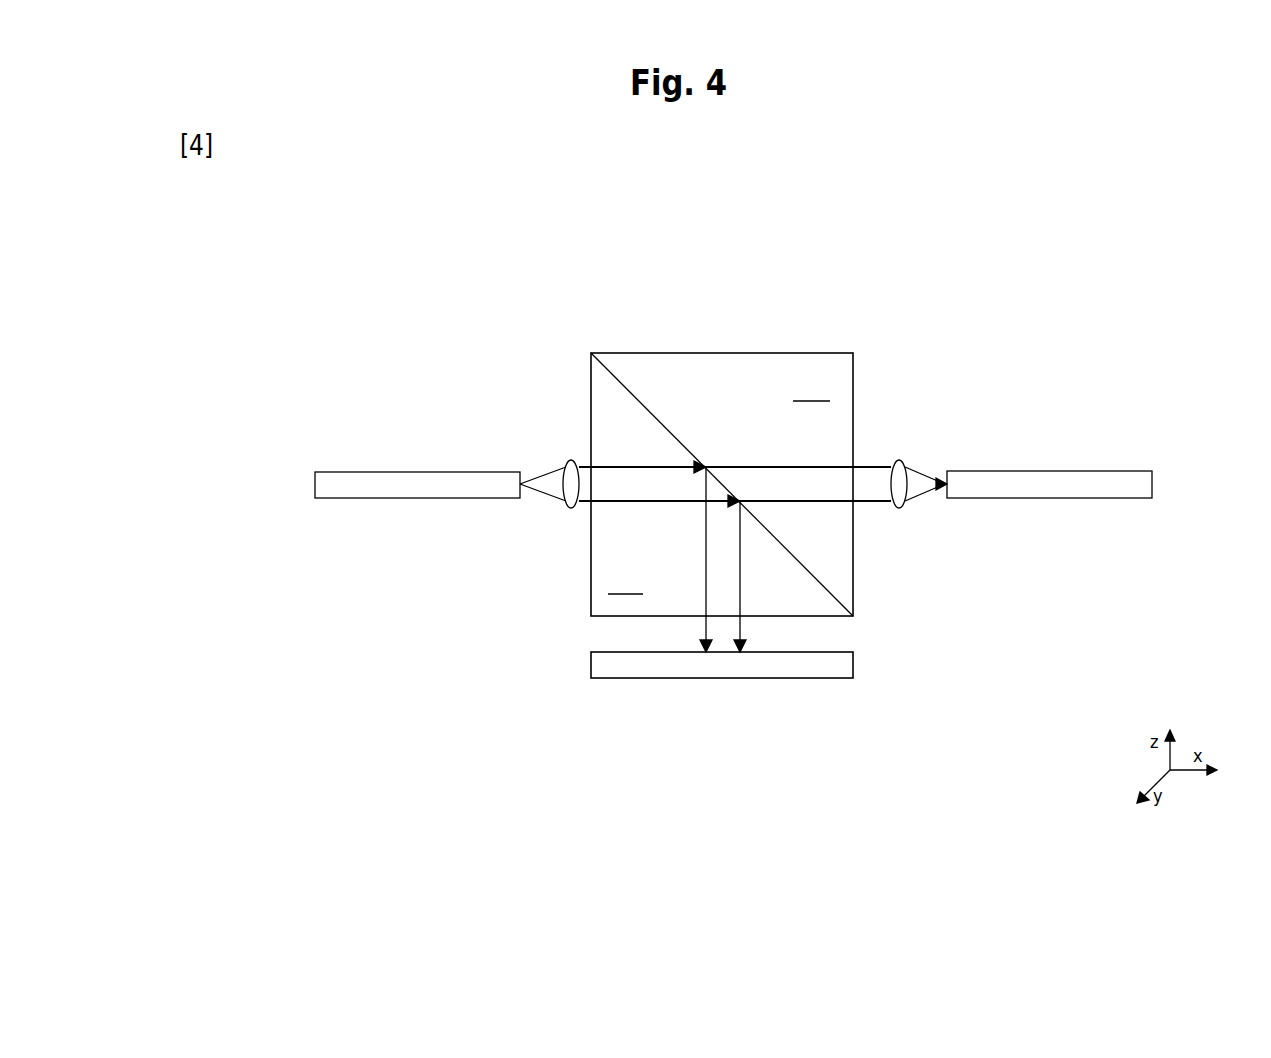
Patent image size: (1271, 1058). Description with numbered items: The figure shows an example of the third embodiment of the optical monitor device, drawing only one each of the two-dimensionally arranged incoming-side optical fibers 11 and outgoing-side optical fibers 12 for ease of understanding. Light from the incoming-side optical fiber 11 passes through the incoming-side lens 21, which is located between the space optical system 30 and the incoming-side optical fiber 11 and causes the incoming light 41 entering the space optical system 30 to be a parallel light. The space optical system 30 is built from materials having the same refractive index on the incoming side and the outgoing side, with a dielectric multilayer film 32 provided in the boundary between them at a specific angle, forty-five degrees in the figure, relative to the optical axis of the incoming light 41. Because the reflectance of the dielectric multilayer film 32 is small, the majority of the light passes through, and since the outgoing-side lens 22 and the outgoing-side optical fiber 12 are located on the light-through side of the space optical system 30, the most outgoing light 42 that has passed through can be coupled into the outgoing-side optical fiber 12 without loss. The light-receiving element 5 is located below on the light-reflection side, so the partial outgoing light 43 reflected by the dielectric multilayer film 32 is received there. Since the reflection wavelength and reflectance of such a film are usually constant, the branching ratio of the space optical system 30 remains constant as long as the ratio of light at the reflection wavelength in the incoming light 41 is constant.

The incoming-side optical fiber 11 is at (351, 482).
The incoming-side lens 21 is at (568, 460).
The space optical system 30 is at (671, 369).
The dielectric multilayer film 32 is at (681, 441).
The outgoing-side lens 22 is at (900, 462).
The outgoing-side optical fiber 12 is at (1022, 482).
The incoming light 41 is at (582, 507).
The most outgoing light 42 is at (875, 503).
The partial outgoing light 43 is at (705, 625).
The light-receiving element 5 is at (717, 665).